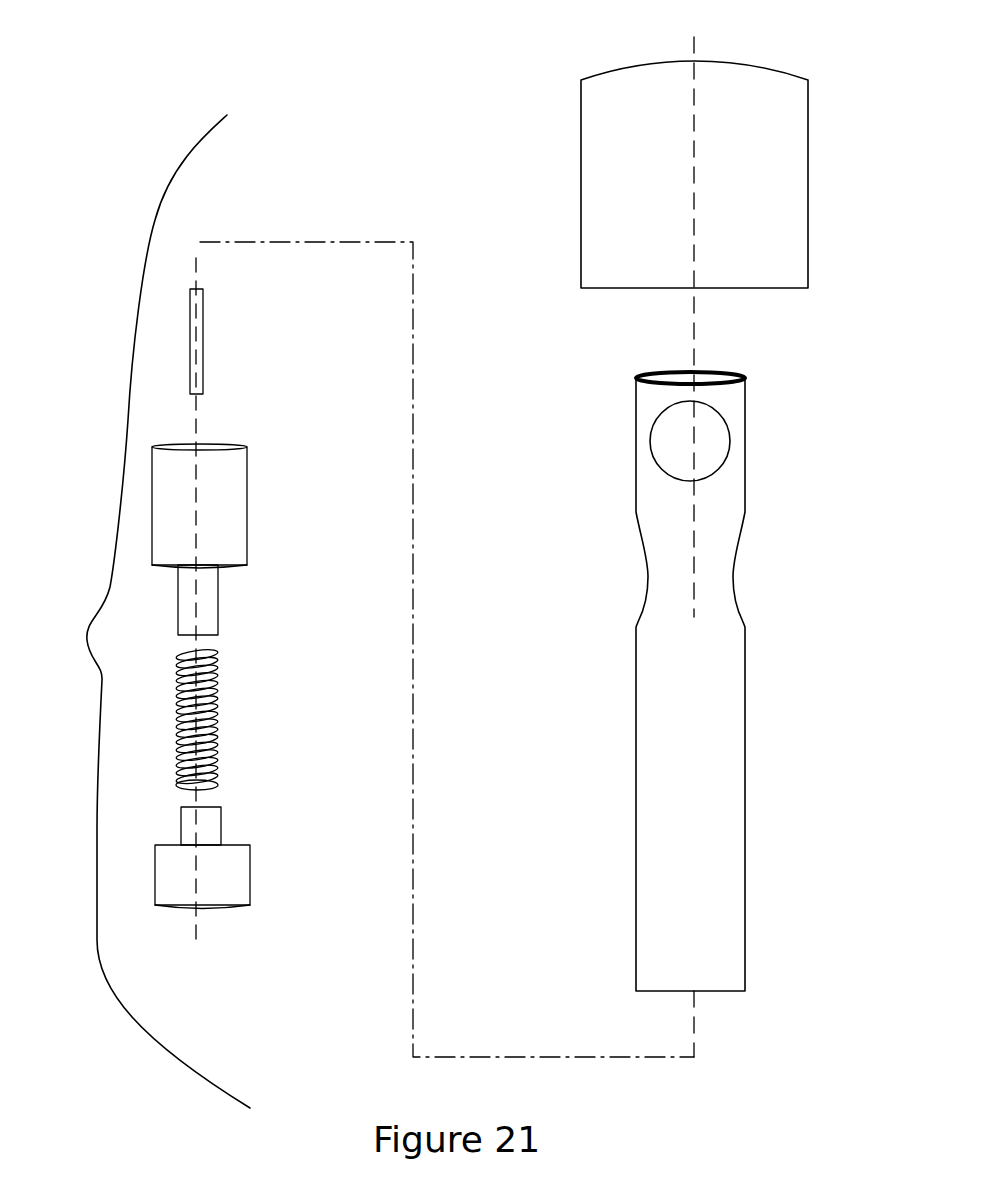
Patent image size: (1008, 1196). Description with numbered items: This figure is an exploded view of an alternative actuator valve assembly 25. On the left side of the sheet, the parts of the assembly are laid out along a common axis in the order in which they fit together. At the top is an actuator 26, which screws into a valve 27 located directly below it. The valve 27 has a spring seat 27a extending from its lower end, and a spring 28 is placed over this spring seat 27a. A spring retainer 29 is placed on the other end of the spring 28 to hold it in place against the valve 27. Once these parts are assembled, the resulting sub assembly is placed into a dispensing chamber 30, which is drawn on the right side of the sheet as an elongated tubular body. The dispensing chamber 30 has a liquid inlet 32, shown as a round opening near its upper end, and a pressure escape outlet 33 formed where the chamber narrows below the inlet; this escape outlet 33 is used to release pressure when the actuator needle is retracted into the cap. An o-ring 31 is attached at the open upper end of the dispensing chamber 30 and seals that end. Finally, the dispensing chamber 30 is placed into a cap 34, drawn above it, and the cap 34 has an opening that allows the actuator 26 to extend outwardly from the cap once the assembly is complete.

The alternative actuator valve assembly 25 is at (138, 611).
The actuator 26 is at (210, 338).
The valve 27 is at (255, 497).
The spring seat 27a is at (220, 600).
The spring 28 is at (232, 712).
The spring retainer 29 is at (252, 880).
The dispensing chamber 30 is at (643, 737).
The o-ring 31 is at (647, 375).
The liquid inlet 32 is at (720, 450).
The pressure escape outlet 33 is at (747, 585).
The cap 34 is at (795, 187).